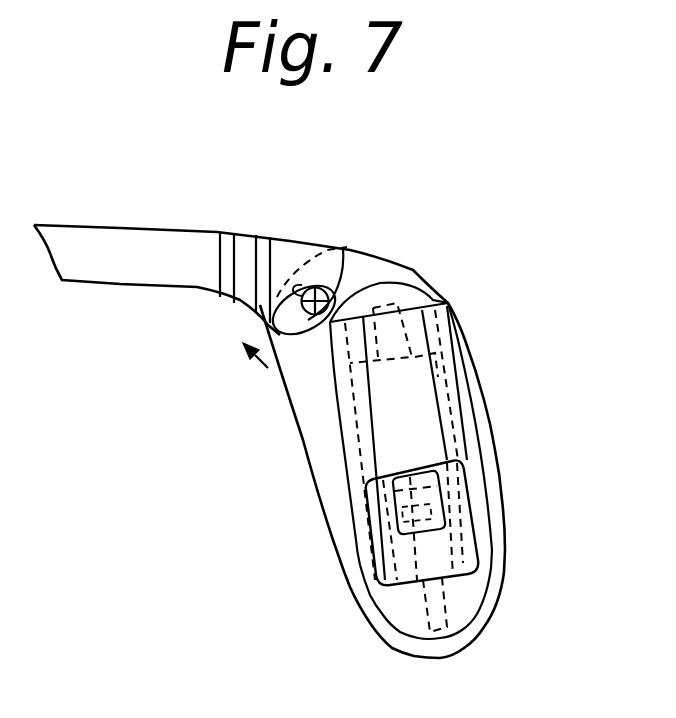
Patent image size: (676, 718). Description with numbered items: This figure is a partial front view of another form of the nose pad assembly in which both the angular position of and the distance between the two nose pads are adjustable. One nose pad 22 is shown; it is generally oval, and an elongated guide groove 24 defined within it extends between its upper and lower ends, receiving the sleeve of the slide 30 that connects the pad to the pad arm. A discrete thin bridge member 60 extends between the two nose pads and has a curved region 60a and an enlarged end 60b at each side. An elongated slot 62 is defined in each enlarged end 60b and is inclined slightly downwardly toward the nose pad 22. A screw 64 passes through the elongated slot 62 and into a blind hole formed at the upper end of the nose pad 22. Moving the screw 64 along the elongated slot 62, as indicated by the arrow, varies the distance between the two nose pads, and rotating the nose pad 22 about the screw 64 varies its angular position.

The nose pad 22 is at (340, 503).
The guide groove 24 is at (417, 380).
The slide 30 is at (427, 542).
The bridge member 60 is at (85, 240).
The curved region 60a is at (263, 257).
The enlarged end 60b is at (350, 248).
The elongated slot 62 is at (300, 297).
The screw 64 is at (312, 310).